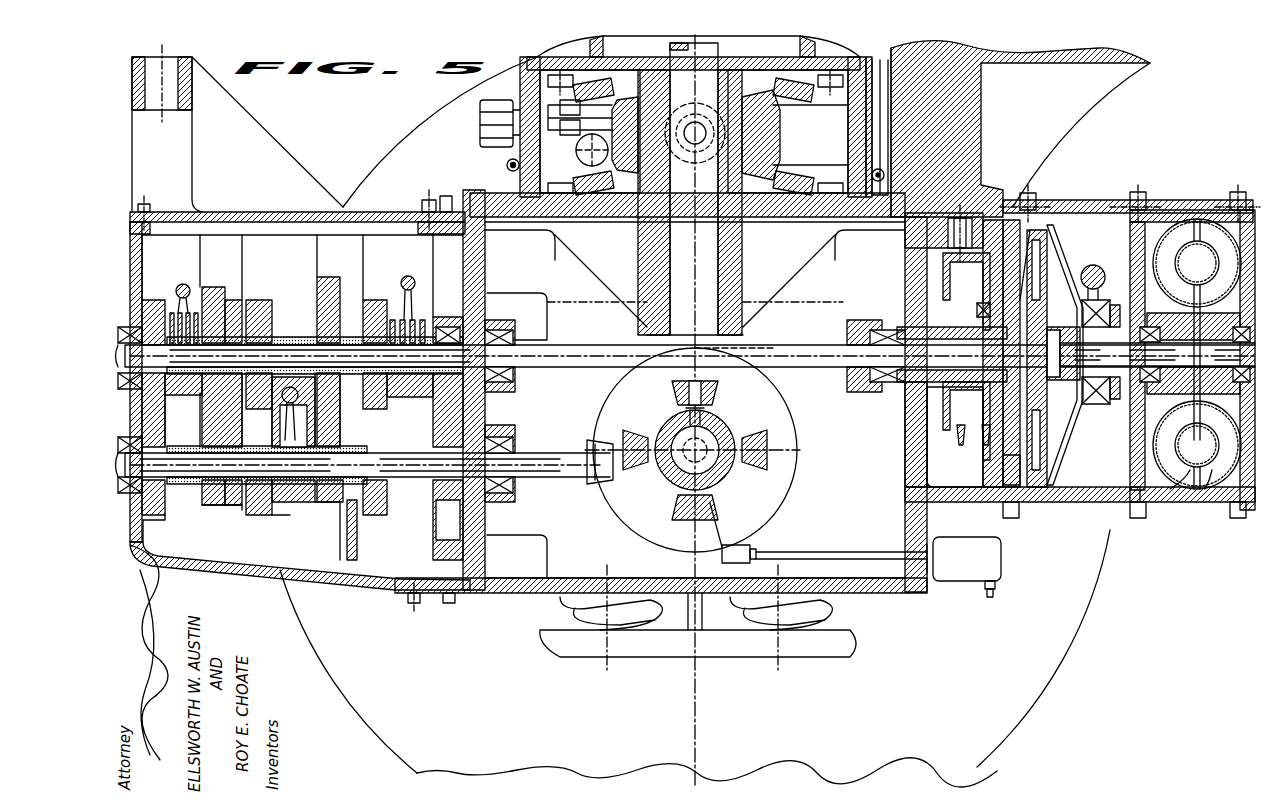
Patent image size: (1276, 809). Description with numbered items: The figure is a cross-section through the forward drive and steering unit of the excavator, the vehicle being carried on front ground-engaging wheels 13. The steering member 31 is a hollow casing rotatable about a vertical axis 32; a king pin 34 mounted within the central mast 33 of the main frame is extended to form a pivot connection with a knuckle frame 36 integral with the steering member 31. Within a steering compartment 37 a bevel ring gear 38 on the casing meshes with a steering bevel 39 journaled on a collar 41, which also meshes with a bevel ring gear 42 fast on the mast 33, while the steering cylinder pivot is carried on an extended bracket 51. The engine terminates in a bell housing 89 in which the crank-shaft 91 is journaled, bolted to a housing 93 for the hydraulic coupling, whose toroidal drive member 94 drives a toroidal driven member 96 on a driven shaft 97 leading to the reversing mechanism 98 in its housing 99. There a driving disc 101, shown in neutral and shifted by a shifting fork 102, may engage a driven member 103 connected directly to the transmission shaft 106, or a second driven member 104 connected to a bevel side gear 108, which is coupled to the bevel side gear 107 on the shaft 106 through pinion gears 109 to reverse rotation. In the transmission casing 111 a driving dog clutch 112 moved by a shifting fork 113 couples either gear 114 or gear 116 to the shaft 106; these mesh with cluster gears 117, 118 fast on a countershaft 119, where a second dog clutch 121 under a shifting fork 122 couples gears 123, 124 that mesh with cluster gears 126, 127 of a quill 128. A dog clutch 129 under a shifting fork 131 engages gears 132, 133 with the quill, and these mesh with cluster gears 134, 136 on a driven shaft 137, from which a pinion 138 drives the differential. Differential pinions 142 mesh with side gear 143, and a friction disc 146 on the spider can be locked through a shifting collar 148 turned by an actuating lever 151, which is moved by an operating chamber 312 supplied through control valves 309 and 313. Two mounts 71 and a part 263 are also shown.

The front ground-engaging wheels 13 is at (1036, 714).
The steering member 31 is at (905, 590).
The vertical axis 32 is at (737, 246).
The central mast 33 is at (815, 50).
The king pin 34 is at (650, 257).
The knuckle frame 36 is at (975, 120).
The steering compartment 37 is at (862, 97).
The bevel ring gear 38 is at (808, 176).
The steering bevel 39 is at (762, 150).
The collar 41 is at (770, 120).
The bevel ring gear 42 is at (800, 90).
The extended bracket 51 is at (245, 123).
The resilient mount 71 is at (640, 635).
The bell housing 89 is at (1232, 280).
The engine crank-shaft 91 is at (1226, 370).
The hydraulic coupling housing 93 is at (1188, 210).
The toroidal drive member 94 is at (1212, 488).
The toroidal driven member 96 is at (1183, 488).
The driven shaft 97 is at (1128, 367).
The reversing mechanism 98 is at (1060, 430).
The reversing mechanism housing 99 is at (1080, 498).
The driving disc 101 is at (1023, 227).
The shifting fork 102 is at (1112, 255).
The driven member 103 is at (1045, 250).
The second driven member 104 is at (1010, 462).
The transmission shaft 106 is at (836, 350).
The bevel side gear 107 is at (932, 425).
The bevel side gear 108 is at (960, 447).
The pinion gears 109 is at (948, 270).
The transmission casing 111 is at (265, 568).
The driving dog clutch 112 is at (193, 395).
The shifting fork 113 is at (186, 271).
The gear 114 is at (163, 300).
The gear 116 is at (218, 287).
The cluster gear 117 is at (222, 505).
The cluster gear 118 is at (180, 515).
The countershaft 119 is at (237, 478).
The second shifting dog clutch 121 is at (285, 502).
The shifting fork 122 is at (292, 385).
The gear 123 is at (257, 515).
The gear 124 is at (325, 502).
The cluster gear 126 is at (263, 300).
The cluster gear 127 is at (326, 277).
The quill 128 is at (350, 300).
The dog clutch 129 is at (415, 397).
The shifting fork 131 is at (415, 283).
The gear 132 is at (380, 290).
The gear 133 is at (440, 310).
The cluster gear 134 is at (382, 520).
The cluster gear 136 is at (440, 545).
The driven shaft 137 is at (500, 470).
The pinion 138 is at (592, 482).
The differential pinions 142 is at (722, 415).
The side gear 143 is at (743, 466).
The friction disc 146 is at (597, 423).
The shifting collar 148 is at (660, 470).
The actuating lever 151 is at (760, 515).
The ring 263 is at (575, 160).
The control valve 309 is at (484, 114).
The operating chamber 312 is at (996, 575).
The control valve 313 is at (506, 163).